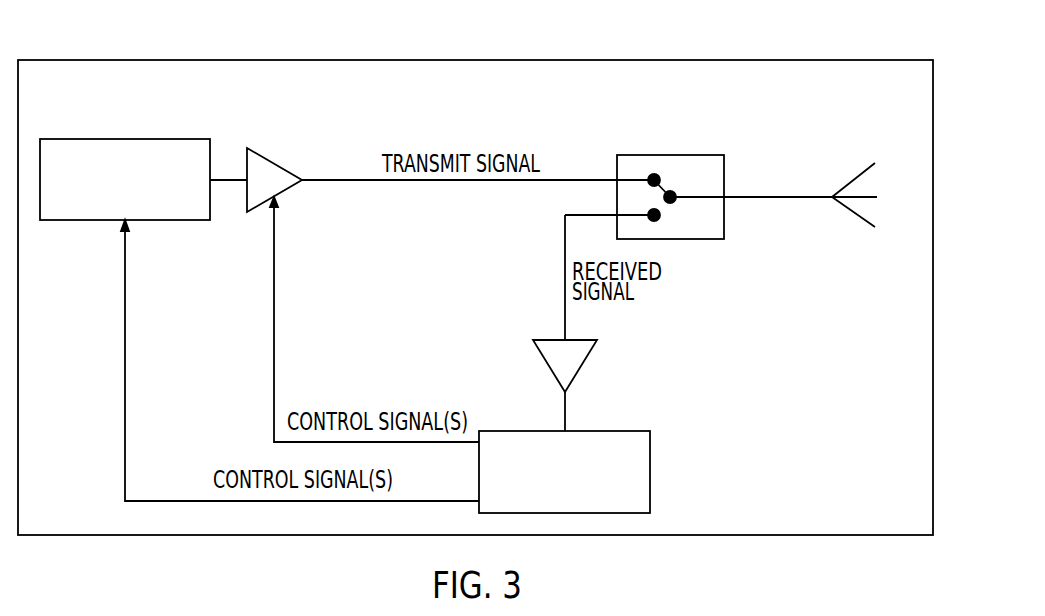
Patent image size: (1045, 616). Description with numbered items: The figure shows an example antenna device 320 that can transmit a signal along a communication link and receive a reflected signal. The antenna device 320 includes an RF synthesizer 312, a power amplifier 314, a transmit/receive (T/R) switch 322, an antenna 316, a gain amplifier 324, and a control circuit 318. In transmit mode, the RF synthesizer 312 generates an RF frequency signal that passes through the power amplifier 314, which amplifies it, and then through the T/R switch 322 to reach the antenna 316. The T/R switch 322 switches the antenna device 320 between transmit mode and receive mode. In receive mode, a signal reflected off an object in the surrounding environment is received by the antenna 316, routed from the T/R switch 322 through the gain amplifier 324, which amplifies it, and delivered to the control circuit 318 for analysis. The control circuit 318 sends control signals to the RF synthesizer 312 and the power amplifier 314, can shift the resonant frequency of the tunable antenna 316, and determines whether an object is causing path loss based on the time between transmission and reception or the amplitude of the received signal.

The antenna device 320 is at (100, 38).
The RF synthesizer 312 is at (126, 139).
The power amplifier 314 is at (283, 165).
The T/R switch 322 is at (670, 239).
The antenna 316 is at (852, 215).
The gain amplifier 324 is at (547, 370).
The control circuit 318 is at (598, 431).